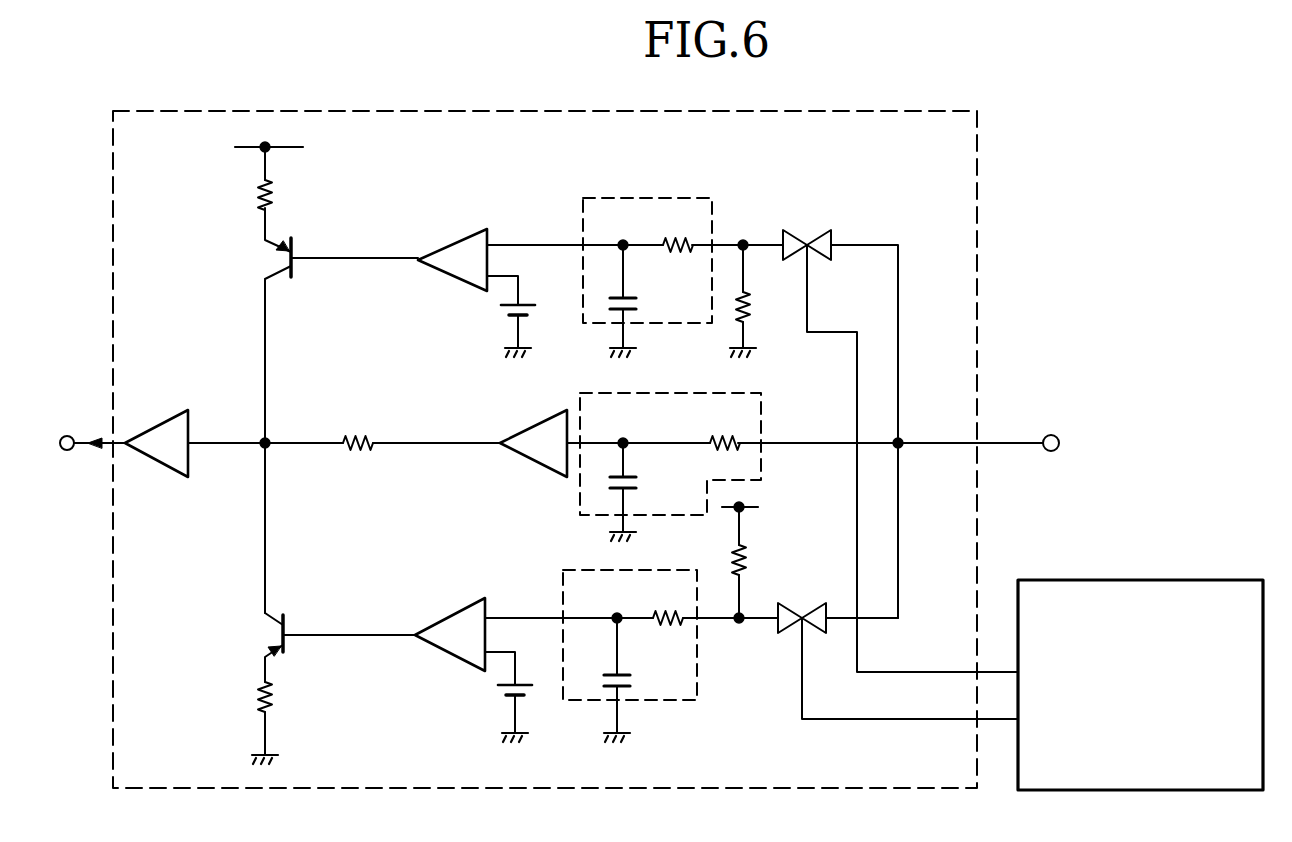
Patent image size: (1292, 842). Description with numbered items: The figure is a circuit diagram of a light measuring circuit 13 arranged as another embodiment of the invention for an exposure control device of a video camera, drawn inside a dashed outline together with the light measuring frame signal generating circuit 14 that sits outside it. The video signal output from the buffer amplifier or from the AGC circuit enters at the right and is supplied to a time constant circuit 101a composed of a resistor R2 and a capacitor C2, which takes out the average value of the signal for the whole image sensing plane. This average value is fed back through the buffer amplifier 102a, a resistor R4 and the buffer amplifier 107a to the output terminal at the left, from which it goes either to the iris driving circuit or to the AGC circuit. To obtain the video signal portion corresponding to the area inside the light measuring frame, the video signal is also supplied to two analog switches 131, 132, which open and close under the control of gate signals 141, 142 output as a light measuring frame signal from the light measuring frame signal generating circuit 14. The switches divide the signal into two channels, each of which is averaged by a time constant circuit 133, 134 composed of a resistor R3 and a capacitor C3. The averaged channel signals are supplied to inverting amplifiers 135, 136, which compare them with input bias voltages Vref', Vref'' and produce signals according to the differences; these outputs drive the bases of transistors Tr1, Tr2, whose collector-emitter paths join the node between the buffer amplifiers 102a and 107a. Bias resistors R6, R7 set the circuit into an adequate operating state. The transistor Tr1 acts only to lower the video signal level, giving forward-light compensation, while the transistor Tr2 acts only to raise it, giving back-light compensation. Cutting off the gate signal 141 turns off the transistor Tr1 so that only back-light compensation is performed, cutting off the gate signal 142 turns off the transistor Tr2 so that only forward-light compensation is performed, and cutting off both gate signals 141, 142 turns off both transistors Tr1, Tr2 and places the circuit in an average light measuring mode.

The light measuring circuit 13 is at (528, 110).
The light measuring frame signal generating circuit 14 is at (1147, 582).
The analog switch 131 is at (795, 235).
The analog switch 132 is at (788, 606).
The time constant circuit 133 is at (618, 197).
The time constant circuit 134 is at (657, 702).
The inverting amplifier 135 is at (448, 248).
The inverting amplifier 136 is at (440, 622).
The gate signal 141 is at (888, 672).
The gate signal 142 is at (872, 720).
The time constant circuit 101a is at (763, 418).
The buffer amplifier 102a is at (530, 462).
The buffer amplifier 107a is at (162, 465).
The transistor Tr1 is at (273, 258).
The transistor Tr2 is at (265, 628).
The resistor R2 is at (717, 440).
The resistor R3 is at (678, 240).
The resistor R4 is at (352, 450).
The bias resistor R6 is at (275, 192).
The bias resistor R7 is at (270, 705).
The capacitor C2 is at (634, 483).
The capacitor C3 is at (636, 305).
The input bias voltage Vref' is at (485, 331).
The input bias voltage Vref'' is at (482, 713).